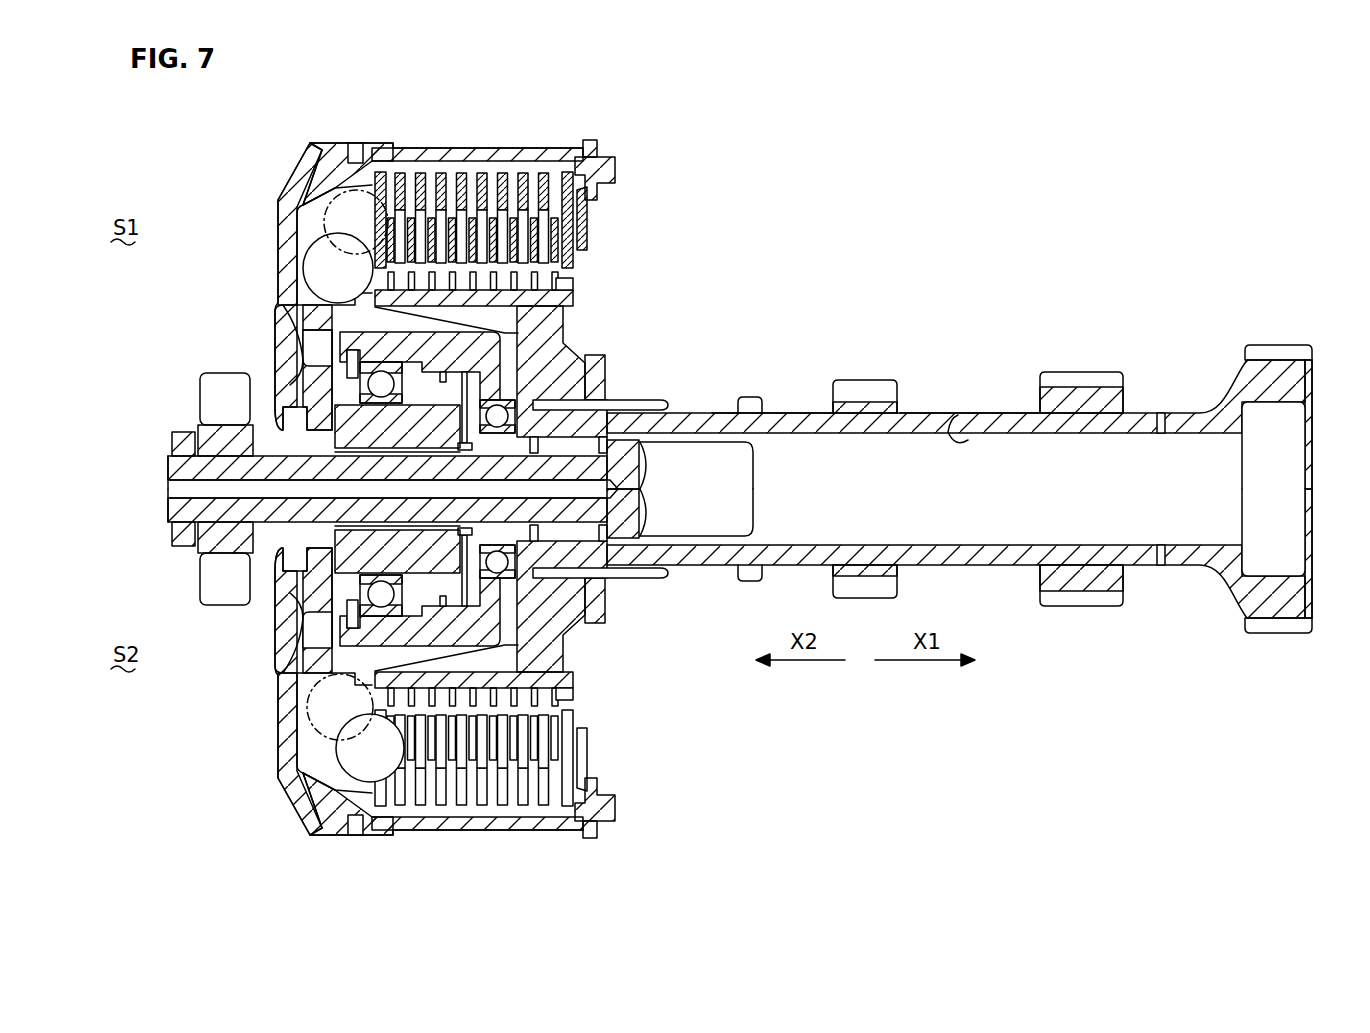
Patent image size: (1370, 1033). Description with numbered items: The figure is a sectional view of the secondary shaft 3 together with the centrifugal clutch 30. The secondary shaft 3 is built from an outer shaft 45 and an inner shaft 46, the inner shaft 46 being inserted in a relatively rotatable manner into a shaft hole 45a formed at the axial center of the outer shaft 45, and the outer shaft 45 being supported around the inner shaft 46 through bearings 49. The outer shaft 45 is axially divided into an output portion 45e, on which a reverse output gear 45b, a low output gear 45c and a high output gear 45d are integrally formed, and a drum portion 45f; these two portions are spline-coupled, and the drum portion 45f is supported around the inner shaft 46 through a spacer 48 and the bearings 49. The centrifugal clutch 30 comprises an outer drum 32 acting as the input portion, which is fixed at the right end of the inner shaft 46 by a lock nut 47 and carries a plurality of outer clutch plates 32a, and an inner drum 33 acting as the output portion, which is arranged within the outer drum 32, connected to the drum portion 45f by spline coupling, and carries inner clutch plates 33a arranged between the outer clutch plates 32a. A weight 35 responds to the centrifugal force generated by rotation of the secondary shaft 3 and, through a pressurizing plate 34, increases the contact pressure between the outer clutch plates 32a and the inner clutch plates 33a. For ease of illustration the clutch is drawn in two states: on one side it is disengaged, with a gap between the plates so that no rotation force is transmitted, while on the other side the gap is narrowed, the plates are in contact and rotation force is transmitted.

The secondary shaft 3 is at (818, 322).
The centrifugal clutch 30 is at (605, 149).
The outer drum 32 is at (300, 175).
The outer clutch plates 32a is at (430, 176).
The inner drum 33 is at (560, 345).
The inner clutch plates 33a is at (560, 300).
The pressurizing plate 34 is at (378, 192).
The weight 35 is at (303, 265).
The outer shaft 45 is at (787, 412).
The shaft hole 45a is at (968, 440).
The reverse output gear 45b is at (872, 380).
The low output gear 45c is at (1085, 372).
The high output gear 45d is at (1277, 345).
The output portion 45e is at (930, 413).
The drum portion 45f is at (320, 328).
The inner shaft 46 is at (715, 440).
The lock nut 47 is at (182, 550).
The spacer 48 is at (333, 402).
The bearings 49 is at (497, 402).